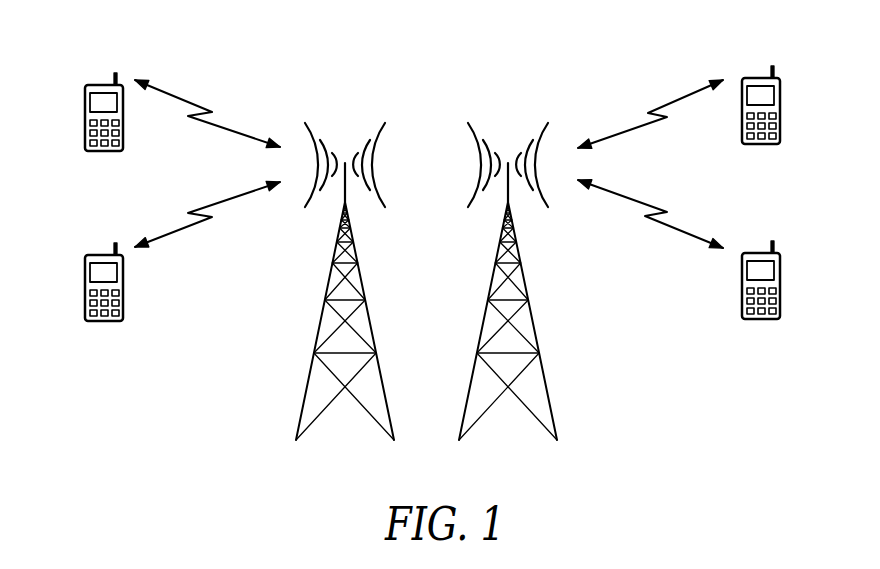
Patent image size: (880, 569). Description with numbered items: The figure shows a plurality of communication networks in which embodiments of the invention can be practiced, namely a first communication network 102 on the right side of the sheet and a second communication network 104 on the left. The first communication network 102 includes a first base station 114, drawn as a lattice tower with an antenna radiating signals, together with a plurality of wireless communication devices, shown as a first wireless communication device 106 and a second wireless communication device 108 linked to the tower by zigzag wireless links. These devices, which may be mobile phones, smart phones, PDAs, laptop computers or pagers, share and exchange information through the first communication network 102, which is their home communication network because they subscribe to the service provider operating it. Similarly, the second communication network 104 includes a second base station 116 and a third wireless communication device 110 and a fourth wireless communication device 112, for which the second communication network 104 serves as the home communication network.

The first communication network 102 is at (692, 63).
The second communication network 104 is at (101, 50).
The first wireless communication device 106 is at (780, 110).
The second wireless communication device 108 is at (780, 285).
The third wireless communication device 110 is at (85, 119).
The fourth wireless communication device 112 is at (85, 289).
The first base station 114 is at (474, 370).
The second base station 116 is at (309, 370).